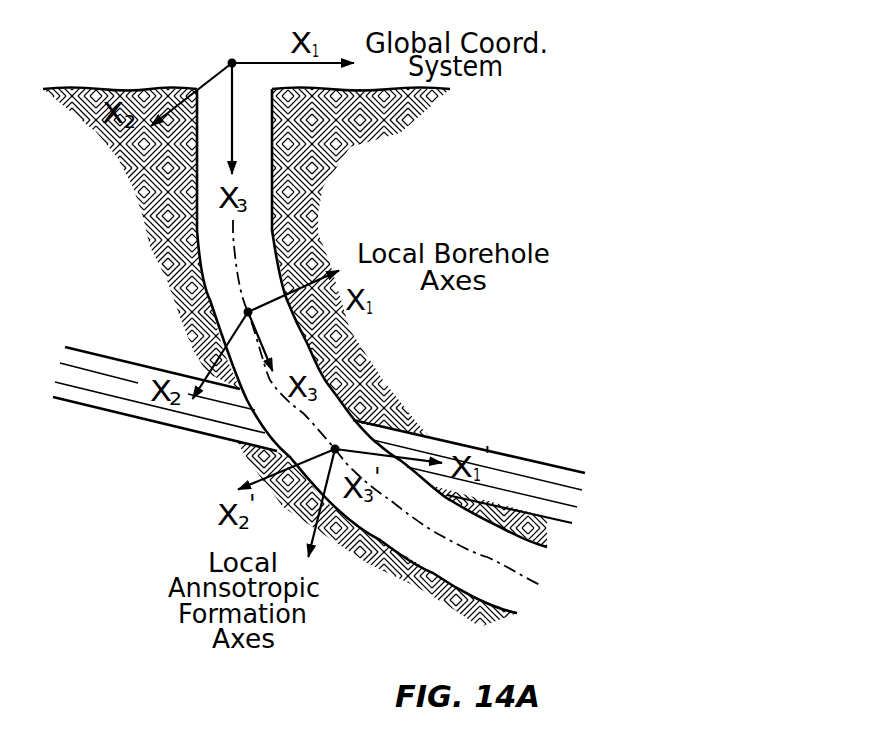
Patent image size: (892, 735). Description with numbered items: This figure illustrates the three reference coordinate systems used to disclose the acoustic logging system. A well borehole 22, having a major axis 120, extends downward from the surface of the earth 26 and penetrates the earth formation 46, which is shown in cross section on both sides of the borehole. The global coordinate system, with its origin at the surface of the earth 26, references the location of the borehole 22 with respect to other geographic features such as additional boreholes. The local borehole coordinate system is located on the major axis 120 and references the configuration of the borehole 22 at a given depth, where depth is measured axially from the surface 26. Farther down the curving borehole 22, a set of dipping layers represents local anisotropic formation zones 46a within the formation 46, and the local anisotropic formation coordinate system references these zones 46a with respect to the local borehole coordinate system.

The surface of the earth 26 is at (125, 88).
The earth formation 46 is at (175, 177).
The major axis 120 is at (233, 235).
The well borehole 22 is at (253, 254).
The anisotropic formation zones 46a is at (123, 389).